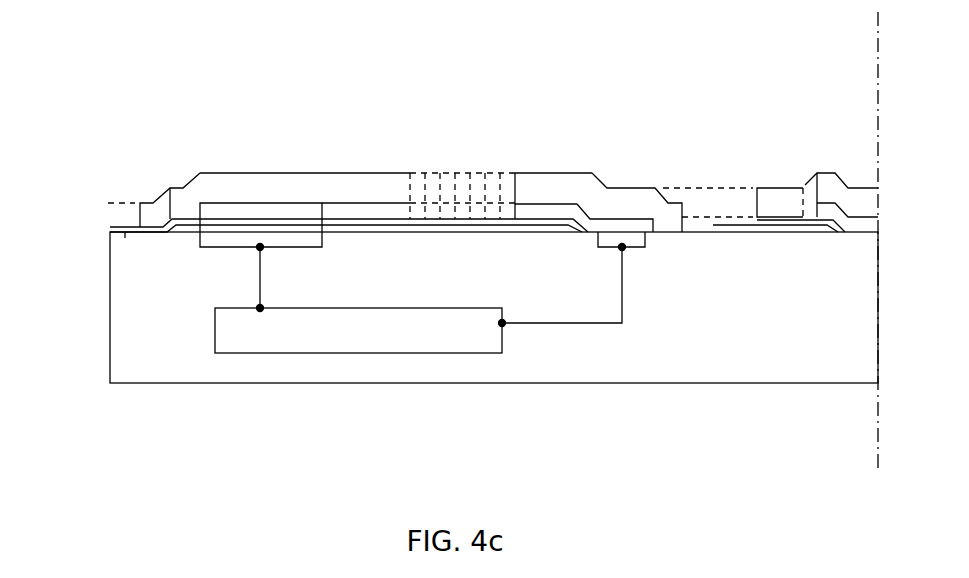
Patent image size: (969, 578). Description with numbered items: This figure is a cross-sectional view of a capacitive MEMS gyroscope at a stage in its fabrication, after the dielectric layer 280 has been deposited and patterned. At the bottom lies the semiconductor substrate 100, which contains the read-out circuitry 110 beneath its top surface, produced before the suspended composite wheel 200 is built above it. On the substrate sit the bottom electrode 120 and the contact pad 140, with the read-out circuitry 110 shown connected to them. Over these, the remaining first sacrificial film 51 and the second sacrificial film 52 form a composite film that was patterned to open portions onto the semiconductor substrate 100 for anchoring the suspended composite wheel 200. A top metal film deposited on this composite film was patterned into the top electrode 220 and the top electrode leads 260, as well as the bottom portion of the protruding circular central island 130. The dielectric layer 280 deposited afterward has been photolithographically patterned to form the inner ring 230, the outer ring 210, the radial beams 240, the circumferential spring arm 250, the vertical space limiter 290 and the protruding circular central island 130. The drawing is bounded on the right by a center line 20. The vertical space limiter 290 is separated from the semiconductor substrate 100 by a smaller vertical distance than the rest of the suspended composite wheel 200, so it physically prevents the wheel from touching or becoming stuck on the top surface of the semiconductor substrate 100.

The center line 20 is at (878, 57).
The first sacrificial film 51 is at (497, 228).
The second sacrificial film 52 is at (125, 232).
The semiconductor substrate 100 is at (736, 385).
The read-out circuitry 110 is at (418, 355).
The bottom electrode 120 is at (233, 250).
The protruding circular central island 130 is at (865, 186).
The contact pad 140 is at (633, 250).
The suspended composite wheel 200 is at (97, 157).
The outer ring 210 is at (143, 99).
The top electrode 220 is at (238, 210).
The inner ring 230 is at (757, 174).
The radial beams 240 is at (333, 160).
The circumferential spring arm 250 is at (432, 160).
The top electrode leads 260 is at (378, 212).
The dielectric layer 280 is at (297, 186).
The vertical space limiter 290 is at (152, 195).